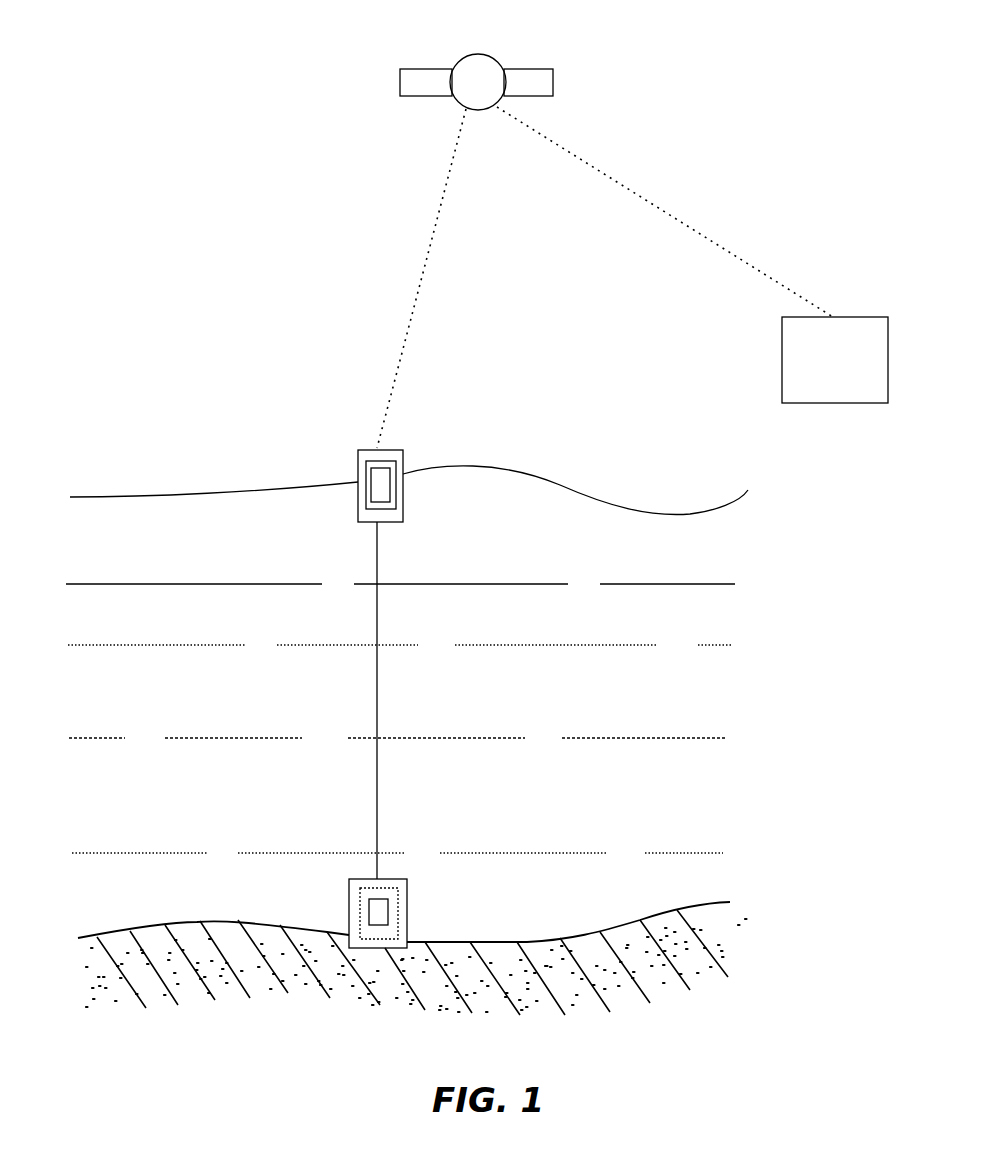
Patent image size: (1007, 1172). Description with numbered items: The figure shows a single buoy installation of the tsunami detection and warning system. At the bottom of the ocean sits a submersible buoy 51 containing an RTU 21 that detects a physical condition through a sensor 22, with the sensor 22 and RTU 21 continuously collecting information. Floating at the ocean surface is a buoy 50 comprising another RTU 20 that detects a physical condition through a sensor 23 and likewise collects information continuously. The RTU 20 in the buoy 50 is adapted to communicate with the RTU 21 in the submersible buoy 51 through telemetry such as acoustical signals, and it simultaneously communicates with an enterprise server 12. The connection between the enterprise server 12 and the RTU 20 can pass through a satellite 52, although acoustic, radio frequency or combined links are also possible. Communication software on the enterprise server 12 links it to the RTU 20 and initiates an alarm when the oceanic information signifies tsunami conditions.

The enterprise server 12 is at (782, 360).
The RTU 20 is at (366, 471).
The RTU 21 is at (398, 911).
The sensor 22 is at (380, 913).
The sensor 23 is at (380, 477).
The buoy 50 is at (362, 452).
The submersible buoy 51 is at (407, 879).
The satellite 52 is at (400, 82).